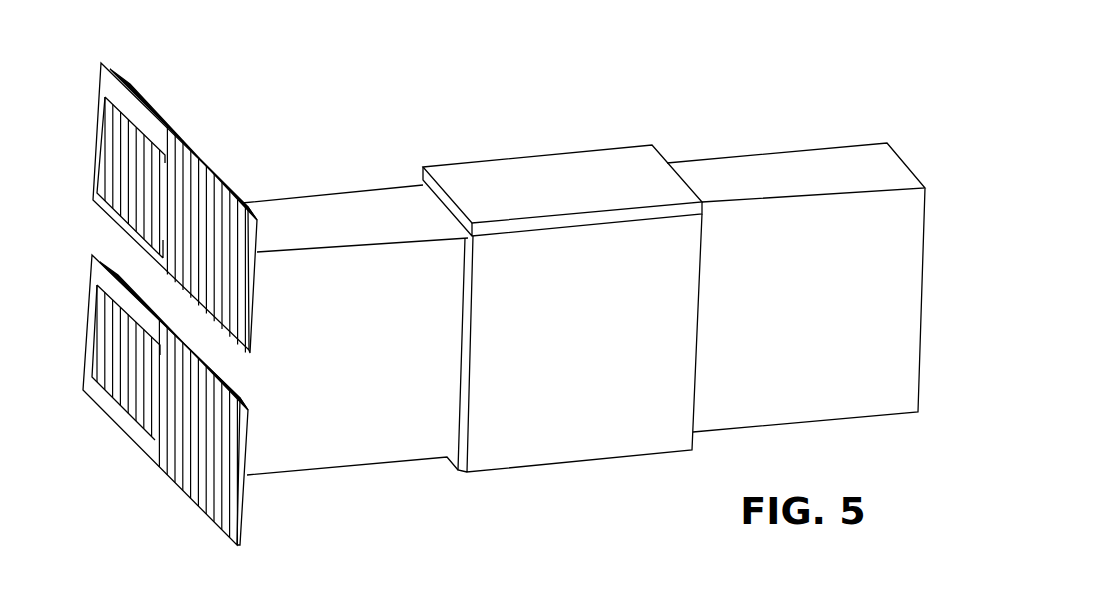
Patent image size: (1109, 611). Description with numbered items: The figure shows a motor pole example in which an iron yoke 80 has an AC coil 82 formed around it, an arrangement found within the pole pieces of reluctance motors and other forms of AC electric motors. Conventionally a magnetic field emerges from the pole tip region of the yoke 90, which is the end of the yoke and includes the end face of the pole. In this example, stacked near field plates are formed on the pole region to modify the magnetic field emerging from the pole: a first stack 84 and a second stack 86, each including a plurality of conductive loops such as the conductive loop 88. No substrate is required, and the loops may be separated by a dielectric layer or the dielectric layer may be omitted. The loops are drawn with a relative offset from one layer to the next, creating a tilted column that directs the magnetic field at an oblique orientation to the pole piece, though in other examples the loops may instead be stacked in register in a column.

The iron yoke 80 is at (740, 170).
The AC coil 82 is at (560, 423).
The first stack 84 is at (213, 190).
The second stack 86 is at (150, 395).
The conductive loop 88 is at (85, 312).
The pole tip region of the yoke 90 is at (290, 457).